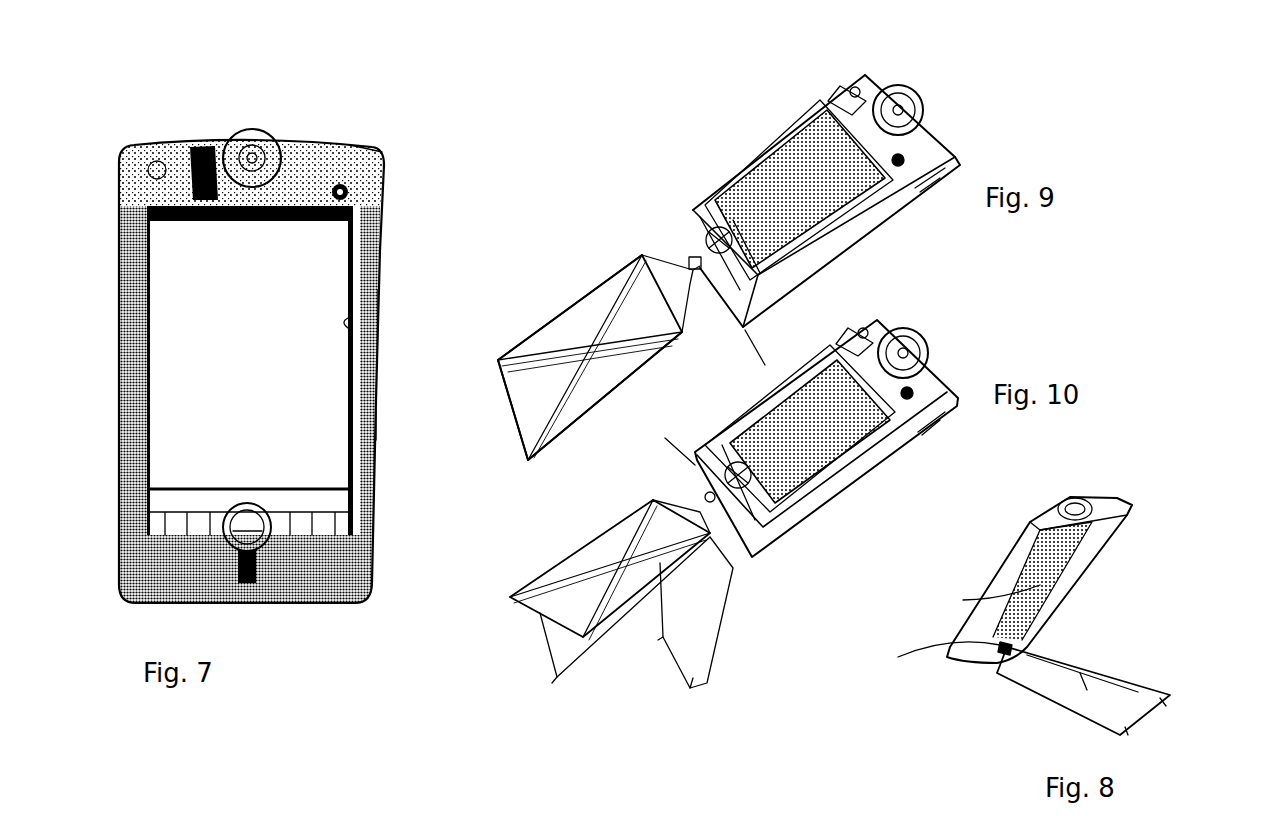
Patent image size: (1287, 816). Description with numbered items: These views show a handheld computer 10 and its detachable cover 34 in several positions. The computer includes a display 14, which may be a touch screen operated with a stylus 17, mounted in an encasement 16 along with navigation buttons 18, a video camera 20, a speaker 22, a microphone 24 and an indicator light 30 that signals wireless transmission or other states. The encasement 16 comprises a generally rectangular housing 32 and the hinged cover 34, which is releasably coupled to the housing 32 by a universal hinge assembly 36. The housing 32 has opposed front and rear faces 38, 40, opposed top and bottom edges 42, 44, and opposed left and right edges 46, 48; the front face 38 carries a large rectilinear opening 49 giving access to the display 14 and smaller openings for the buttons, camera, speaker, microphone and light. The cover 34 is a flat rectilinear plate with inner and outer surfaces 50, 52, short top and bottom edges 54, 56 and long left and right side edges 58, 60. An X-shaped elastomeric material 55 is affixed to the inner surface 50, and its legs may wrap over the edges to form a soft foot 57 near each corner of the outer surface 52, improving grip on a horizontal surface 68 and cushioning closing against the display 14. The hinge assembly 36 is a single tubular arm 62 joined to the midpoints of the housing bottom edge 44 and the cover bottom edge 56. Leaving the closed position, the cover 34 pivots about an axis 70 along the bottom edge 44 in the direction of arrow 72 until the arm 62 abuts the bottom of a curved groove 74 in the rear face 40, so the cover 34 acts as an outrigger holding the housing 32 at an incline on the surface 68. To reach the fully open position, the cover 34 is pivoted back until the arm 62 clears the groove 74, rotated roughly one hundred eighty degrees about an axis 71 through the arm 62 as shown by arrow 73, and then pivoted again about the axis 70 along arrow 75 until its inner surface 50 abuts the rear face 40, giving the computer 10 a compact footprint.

In FIG. 7, the handheld computer 10 is at (444, 69).
In FIG. 9, the handheld computer 10 is at (984, 78).
In FIG. 10, the handheld computer 10 is at (1000, 333).
In FIG. 8, the handheld computer 10 is at (1187, 513).
In FIG. 7, the display 14 is at (355, 272).
In FIG. 7, the encasement 16 is at (380, 300).
In FIG. 7, the stylus 17 is at (390, 152).
In FIG. 7, the navigation buttons 18 is at (330, 600).
In FIG. 7, the video camera 20 is at (258, 108).
In FIG. 7, the speaker 22 is at (198, 124).
In FIG. 7, the microphone 24 is at (297, 607).
In FIG. 7, the indicator light 30 is at (283, 150).
In FIG. 7, the housing 32 is at (390, 356).
In FIG. 9, the housing 32 is at (878, 250).
In FIG. 10, the housing 32 is at (878, 480).
In FIG. 8, the housing 32 is at (1112, 559).
In FIG. 9, the cover 34 is at (611, 350).
In FIG. 10, the cover 34 is at (623, 603).
In FIG. 8, the cover 34 is at (1101, 694).
In FIG. 7, the universal hinge assembly 36 is at (262, 636).
In FIG. 7, the front face 38 is at (119, 340).
In FIG. 8, the rear face 40 is at (1022, 578).
In FIG. 7, the top edge 42 is at (157, 142).
In FIG. 7, the bottom edge 44 is at (175, 606).
In FIG. 7, the left edge 46 is at (117, 302).
In FIG. 7, the right edge 48 is at (378, 425).
In FIG. 7, the opening 49 is at (375, 333).
In FIG. 9, the inner surface 50 is at (583, 412).
In FIG. 10, the inner surface 50 is at (605, 535).
In FIG. 10, the outer surface 52 is at (713, 630).
In FIG. 8, the outer surface 52 is at (1150, 682).
In FIG. 9, the top edge 54 is at (513, 427).
In FIG. 8, the top edge 54 is at (1135, 724).
In FIG. 9, the elastomeric material 55 is at (616, 287).
In FIG. 10, the elastomeric material 55 is at (640, 508).
In FIG. 9, the bottom edge 56 is at (690, 330).
In FIG. 8, the bottom edge 56 is at (990, 675).
In FIG. 10, the foot 57 is at (558, 698).
In FIG. 8, the foot 57 is at (1060, 657).
In FIG. 9, the left side edge 58 is at (547, 325).
In FIG. 8, the left side edge 58 is at (1105, 672).
In FIG. 9, the right side edge 60 is at (627, 396).
In FIG. 8, the right side edge 60 is at (1093, 722).
In FIG. 9, the arm 62 is at (688, 262).
In FIG. 10, the arm 62 is at (703, 497).
In FIG. 8, the arm 62 is at (1045, 645).
In FIG. 8, the horizontal surface 68 is at (968, 667).
In FIG. 9, the axis 70 is at (748, 343).
In FIG. 10, the axis 70 is at (673, 433).
In FIG. 9, the axis 71 is at (473, 443).
In FIG. 10, the axis 71 is at (517, 650).
In FIG. 9, the arrow 72 is at (638, 232).
In FIG. 10, the arrow 73 is at (606, 584).
In FIG. 8, the curved groove 74 is at (935, 657).
In FIG. 10, the arrow 75 is at (748, 602).